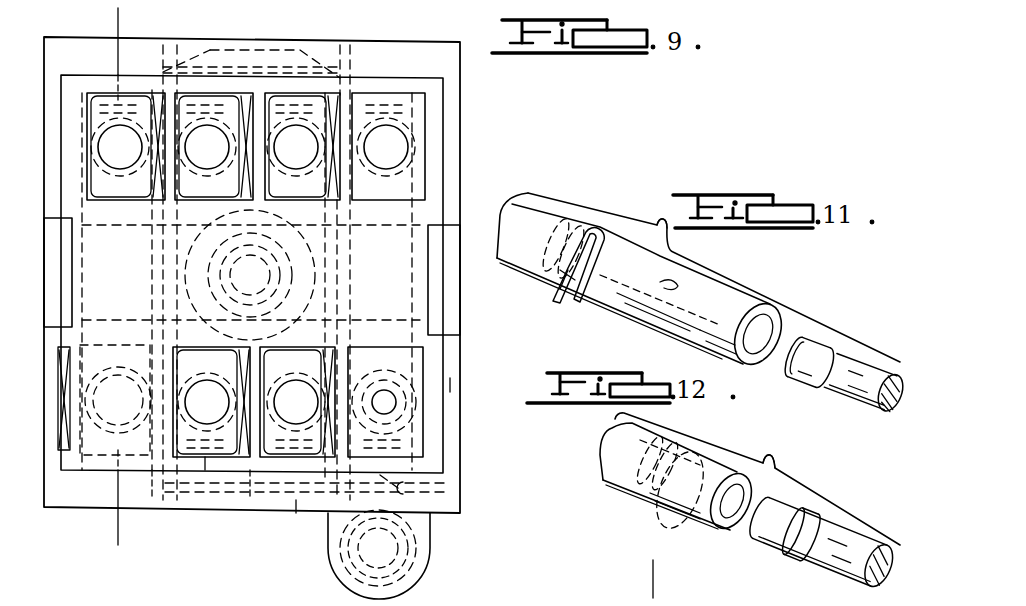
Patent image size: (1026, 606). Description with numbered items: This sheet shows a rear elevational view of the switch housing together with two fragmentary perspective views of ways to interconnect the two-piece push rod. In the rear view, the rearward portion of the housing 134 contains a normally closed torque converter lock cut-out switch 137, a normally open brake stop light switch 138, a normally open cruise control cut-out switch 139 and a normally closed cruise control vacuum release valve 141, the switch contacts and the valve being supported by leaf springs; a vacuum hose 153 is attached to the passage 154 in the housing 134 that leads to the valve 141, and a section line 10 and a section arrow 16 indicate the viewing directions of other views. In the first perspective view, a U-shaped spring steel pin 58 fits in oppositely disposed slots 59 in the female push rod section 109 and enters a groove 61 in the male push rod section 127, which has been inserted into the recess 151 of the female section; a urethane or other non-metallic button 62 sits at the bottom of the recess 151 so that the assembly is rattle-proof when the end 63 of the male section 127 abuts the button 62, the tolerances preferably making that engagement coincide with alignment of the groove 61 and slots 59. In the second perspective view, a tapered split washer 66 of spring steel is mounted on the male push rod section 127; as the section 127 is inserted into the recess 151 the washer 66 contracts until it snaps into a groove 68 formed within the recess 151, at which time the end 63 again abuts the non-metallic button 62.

In FIG. 9, the section line 10- 10 is at (96, 8).
In FIG. 9, the housing 134 is at (455, 190).
In FIG. 9, the torque converter lock cut-out switch 137 is at (117, 443).
In FIG. 9, the brake stop light switch 138 is at (205, 518).
In FIG. 9, the cruise control cut-out switch 139 is at (298, 530).
In FIG. 9, the cruise control vacuum release valve 141 is at (446, 384).
In FIG. 9, the vacuum hose 153 is at (438, 549).
In FIG. 9, the passage 154 is at (403, 488).
In FIG. 9, the end of push rod section 63 is at (155, 538).
In FIG. 11, the end of push rod section 63 is at (800, 333).
In FIG. 9, the groove 68 is at (253, 538).
In FIG. 12, the groove 68 is at (660, 513).
In FIG. 11, the U-shaped spring steel pin 58 is at (598, 217).
In FIG. 11, the slots 59 is at (553, 286).
In FIG. 11, the non-metallic button 62 is at (530, 262).
In FIG. 11, the female push rod section 109 is at (617, 310).
In FIG. 12, the female push rod section 109 is at (612, 478).
In FIG. 11, the recess 151 is at (700, 262).
In FIG. 12, the recess 151 is at (722, 530).
In FIG. 11, the groove 61 is at (850, 348).
In FIG. 11, the male push rod section 127 is at (866, 364).
In FIG. 12, the male push rod section 127 is at (840, 563).
In FIG. 12, the tapered split washer 66 is at (793, 557).
In FIG. 12, the section line 16- 16 is at (688, 554).